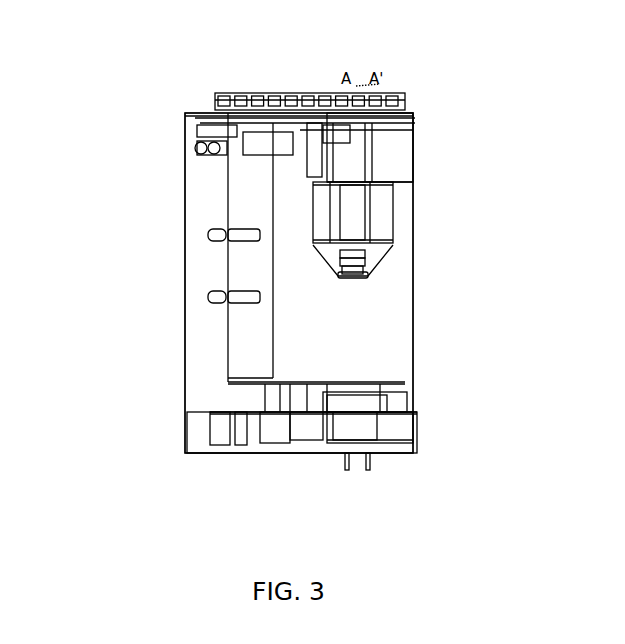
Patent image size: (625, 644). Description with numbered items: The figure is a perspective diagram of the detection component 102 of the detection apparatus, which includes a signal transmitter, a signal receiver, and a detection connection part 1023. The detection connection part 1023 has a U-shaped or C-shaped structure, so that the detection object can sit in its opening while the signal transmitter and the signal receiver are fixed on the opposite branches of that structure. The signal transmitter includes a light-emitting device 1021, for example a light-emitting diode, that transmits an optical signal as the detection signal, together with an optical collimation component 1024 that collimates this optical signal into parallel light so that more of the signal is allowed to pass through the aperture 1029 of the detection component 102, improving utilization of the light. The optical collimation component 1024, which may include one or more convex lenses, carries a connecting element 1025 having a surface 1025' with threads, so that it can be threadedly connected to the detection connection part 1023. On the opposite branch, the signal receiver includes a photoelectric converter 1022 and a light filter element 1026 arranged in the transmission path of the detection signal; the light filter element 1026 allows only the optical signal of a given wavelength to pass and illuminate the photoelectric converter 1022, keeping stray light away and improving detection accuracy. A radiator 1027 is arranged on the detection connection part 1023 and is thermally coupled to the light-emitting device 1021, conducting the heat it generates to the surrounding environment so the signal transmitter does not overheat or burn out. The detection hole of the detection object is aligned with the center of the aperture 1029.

The detection component 102 is at (327, 30).
The light-emitting device 1021 is at (406, 150).
The photoelectric converter 1022 is at (352, 430).
The detection connection part 1023 is at (230, 283).
The optical collimation component 1024 is at (416, 276).
The connecting element 1025 is at (416, 221).
The surface with threads 1025' is at (441, 235).
The light filter element 1026 is at (391, 386).
The radiator 1027 is at (241, 74).
The aperture 1029 is at (225, 317).